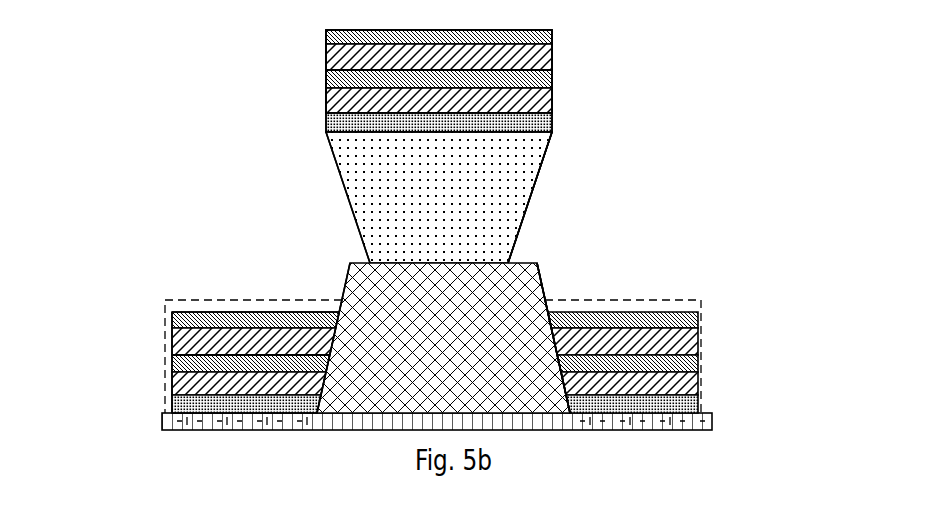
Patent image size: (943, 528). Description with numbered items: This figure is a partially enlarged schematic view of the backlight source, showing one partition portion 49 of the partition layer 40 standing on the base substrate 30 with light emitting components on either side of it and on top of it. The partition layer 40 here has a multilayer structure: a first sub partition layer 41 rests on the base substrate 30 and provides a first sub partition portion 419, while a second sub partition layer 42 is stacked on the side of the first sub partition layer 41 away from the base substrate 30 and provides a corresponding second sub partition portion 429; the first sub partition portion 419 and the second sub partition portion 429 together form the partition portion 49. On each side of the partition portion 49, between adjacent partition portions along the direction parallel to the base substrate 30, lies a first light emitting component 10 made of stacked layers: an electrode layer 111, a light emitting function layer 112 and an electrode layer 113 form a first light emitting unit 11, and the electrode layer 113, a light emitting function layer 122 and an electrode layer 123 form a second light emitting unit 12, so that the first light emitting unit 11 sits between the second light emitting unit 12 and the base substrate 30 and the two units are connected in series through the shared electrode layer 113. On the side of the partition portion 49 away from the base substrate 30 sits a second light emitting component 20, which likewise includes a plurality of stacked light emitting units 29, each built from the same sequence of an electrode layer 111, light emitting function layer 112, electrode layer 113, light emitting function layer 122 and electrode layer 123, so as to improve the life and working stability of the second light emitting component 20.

The first light emitting component 10 is at (193, 300).
The first light emitting unit 11 is at (162, 362).
The second light emitting unit 12 is at (152, 313).
The second light emitting component 20 is at (276, 48).
The light emitting unit 29 is at (323, 30).
The base substrate 30 is at (162, 425).
The partition layer 40 is at (213, 178).
The first sub partition layer 41 is at (345, 276).
The second sub partition layer 42 is at (345, 192).
The partition portion 49 is at (646, 200).
The electrode layer 111 is at (553, 126).
The light emitting function layer 112 is at (553, 100).
The electrode layer 113 is at (553, 80).
The light emitting function layer 122 is at (553, 57).
The electrode layer 123 is at (553, 36).
The first sub partition portion 419 is at (506, 285).
The second sub partition portion 429 is at (514, 216).